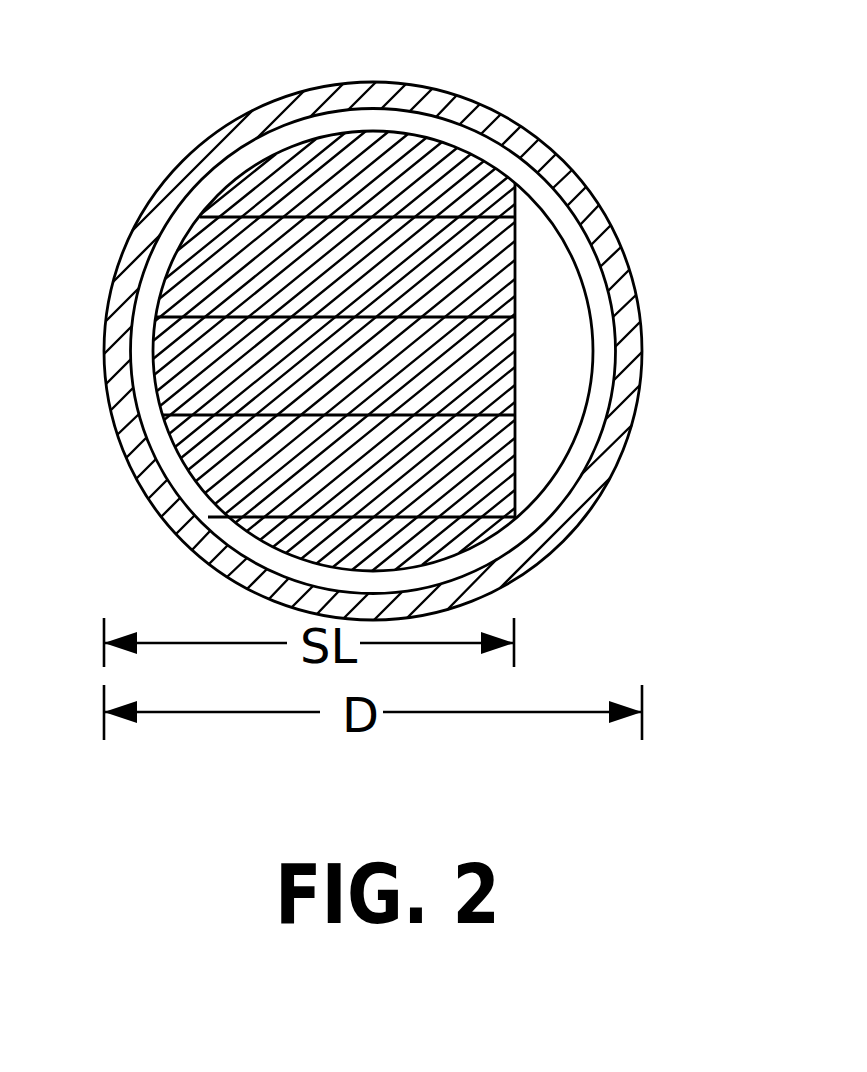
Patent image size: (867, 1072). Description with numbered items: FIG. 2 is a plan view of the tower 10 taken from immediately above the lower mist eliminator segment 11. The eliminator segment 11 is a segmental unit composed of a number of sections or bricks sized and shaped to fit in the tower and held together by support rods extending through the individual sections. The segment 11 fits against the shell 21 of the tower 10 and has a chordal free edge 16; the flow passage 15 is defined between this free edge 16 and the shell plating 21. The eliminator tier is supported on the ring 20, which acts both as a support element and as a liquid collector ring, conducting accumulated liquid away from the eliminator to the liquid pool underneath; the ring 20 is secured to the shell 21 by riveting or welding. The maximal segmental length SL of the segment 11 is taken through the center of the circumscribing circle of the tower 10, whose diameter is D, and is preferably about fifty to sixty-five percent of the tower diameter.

The tower 10 is at (417, 315).
The lower mist eliminator segment 11 is at (432, 187).
The ring 20 is at (517, 177).
The flow passage 15 is at (553, 283).
The shell 21 is at (643, 327).
The chordal free edge 16 is at (517, 393).